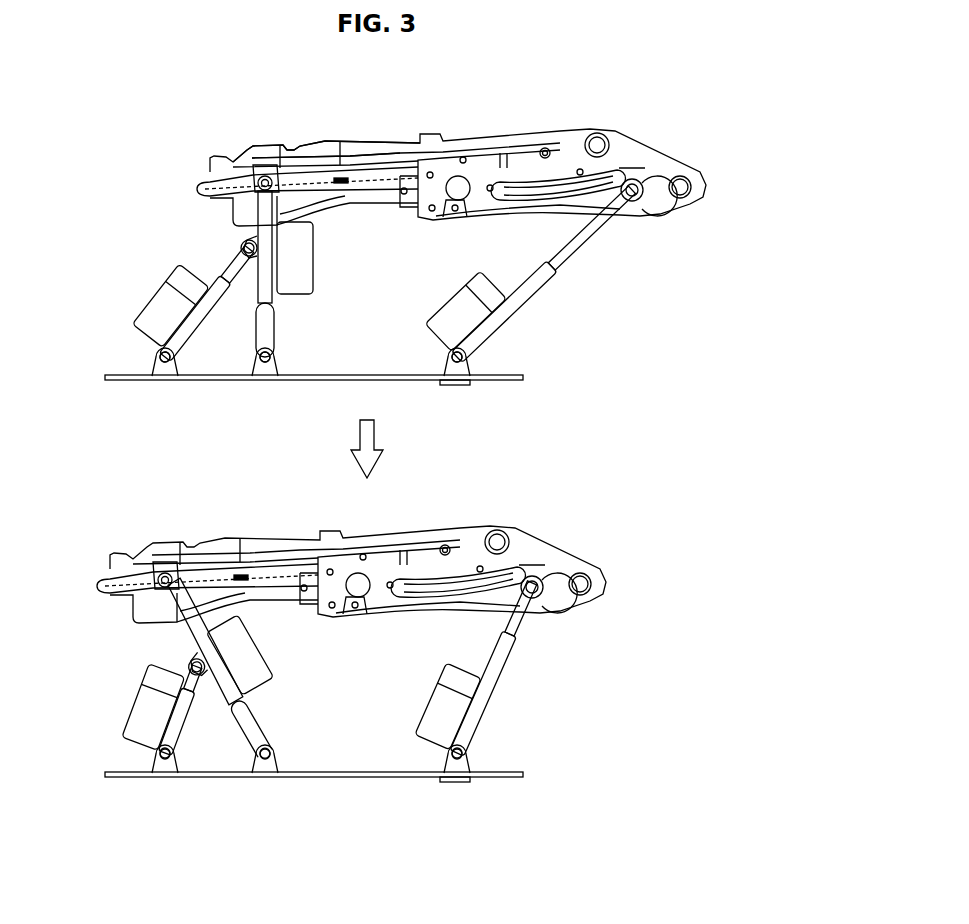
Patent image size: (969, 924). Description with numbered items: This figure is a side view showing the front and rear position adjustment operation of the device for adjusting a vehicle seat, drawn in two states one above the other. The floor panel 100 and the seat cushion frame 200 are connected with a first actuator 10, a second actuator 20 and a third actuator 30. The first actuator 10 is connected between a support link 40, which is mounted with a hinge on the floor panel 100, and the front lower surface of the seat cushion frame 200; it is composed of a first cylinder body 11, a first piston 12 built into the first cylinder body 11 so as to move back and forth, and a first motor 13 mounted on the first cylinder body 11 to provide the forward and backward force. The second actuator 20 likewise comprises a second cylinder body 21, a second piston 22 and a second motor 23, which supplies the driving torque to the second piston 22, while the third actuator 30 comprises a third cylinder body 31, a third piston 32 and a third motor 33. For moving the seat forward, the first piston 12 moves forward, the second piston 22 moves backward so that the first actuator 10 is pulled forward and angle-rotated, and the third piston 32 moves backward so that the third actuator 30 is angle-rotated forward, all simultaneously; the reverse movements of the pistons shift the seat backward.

The seat cushion frame 200 is at (490, 143).
The first actuator 10 is at (135, 152).
The first cylinder body 11 is at (237, 186).
The first piston 12 is at (253, 193).
The first motor 13 is at (283, 235).
The second actuator 20 is at (107, 253).
The second cylinder body 21 is at (182, 335).
The second piston 22 is at (227, 273).
The second motor 23 is at (158, 305).
The third actuator 30 is at (667, 283).
The third cylinder body 31 is at (536, 282).
The third piston 32 is at (586, 237).
The third motor 33 is at (468, 313).
The support link 40 is at (268, 330).
The floor panel 100 is at (523, 378).